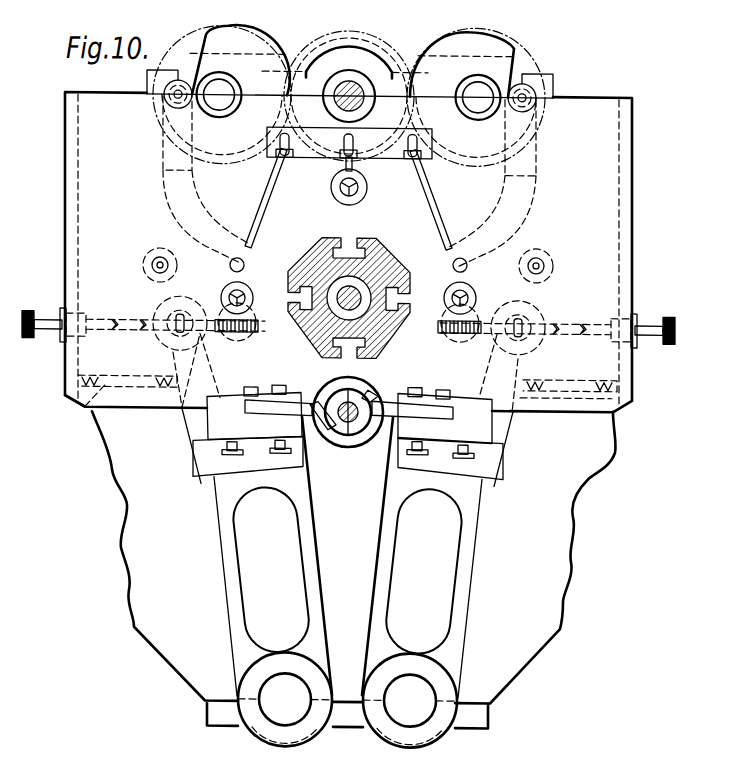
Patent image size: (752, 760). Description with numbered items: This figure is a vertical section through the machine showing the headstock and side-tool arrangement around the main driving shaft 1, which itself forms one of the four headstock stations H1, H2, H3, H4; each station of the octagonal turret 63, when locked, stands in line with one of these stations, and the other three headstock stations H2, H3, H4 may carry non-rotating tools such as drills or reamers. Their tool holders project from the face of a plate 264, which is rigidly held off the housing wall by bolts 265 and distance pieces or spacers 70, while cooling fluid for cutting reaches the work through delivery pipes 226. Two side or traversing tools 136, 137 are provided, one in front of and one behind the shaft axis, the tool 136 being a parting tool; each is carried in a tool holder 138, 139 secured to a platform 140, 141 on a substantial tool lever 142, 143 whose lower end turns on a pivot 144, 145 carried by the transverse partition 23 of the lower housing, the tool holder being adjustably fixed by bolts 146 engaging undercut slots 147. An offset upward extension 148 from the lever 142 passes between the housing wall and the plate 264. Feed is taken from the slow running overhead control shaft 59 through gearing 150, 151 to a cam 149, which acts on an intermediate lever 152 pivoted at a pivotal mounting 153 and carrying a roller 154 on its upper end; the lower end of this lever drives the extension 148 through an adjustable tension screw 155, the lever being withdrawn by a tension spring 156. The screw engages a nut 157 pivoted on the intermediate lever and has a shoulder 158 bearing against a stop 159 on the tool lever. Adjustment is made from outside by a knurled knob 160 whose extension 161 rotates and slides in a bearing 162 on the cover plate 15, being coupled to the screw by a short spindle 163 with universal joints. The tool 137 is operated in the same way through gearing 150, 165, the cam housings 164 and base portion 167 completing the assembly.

The main driving shaft 1 is at (368, 400).
The vertical metal plate 15 is at (65, 241).
The transverse partition 23 is at (552, 539).
The slow running overhead control shaft 59 is at (358, 85).
The turret 63 is at (394, 254).
The distance pieces or spacers 70 is at (163, 248).
The parting tool 136 is at (310, 400).
The side or traversing tool 137 is at (390, 400).
The tool holder 138 is at (232, 396).
The right clamp block 139 is at (462, 404).
The platform 140 is at (202, 463).
The platform 141 is at (505, 463).
The tool lever 142 is at (245, 544).
The tool lever 143 is at (470, 589).
The pivot 144 is at (273, 688).
The pivot 145 is at (222, 447).
The bolts 146 is at (420, 697).
The undercut slots 147 is at (217, 480).
The upward extension 148 is at (188, 427).
The cam 149 is at (262, 52).
The gearing 150 is at (354, 30).
The gearing 151 is at (252, 40).
The intermediate lever 152 is at (170, 209).
The pivotal mounting 153 is at (230, 267).
The roller 154 is at (173, 104).
The adjustable tension screw 155 is at (216, 350).
The tension spring 156 is at (86, 411).
The nut 157 is at (250, 344).
The shoulder 158 is at (183, 315).
The stop 159 is at (163, 345).
The external knurled knob 160 is at (30, 313).
The extension 161 is at (105, 321).
The bearing 162 is at (63, 346).
The short spindle 163 is at (133, 320).
The right housing 164 is at (486, 42).
The gearing 165 is at (535, 68).
The base bar 167 is at (296, 730).
The delivery pipes 226 is at (265, 208).
The plate 264 is at (80, 189).
The bolts 265 is at (152, 267).
The headstock station H1 is at (365, 445).
The headstock station H2 is at (252, 265).
The headstock station H3 is at (330, 186).
The headstock station H4 is at (474, 293).